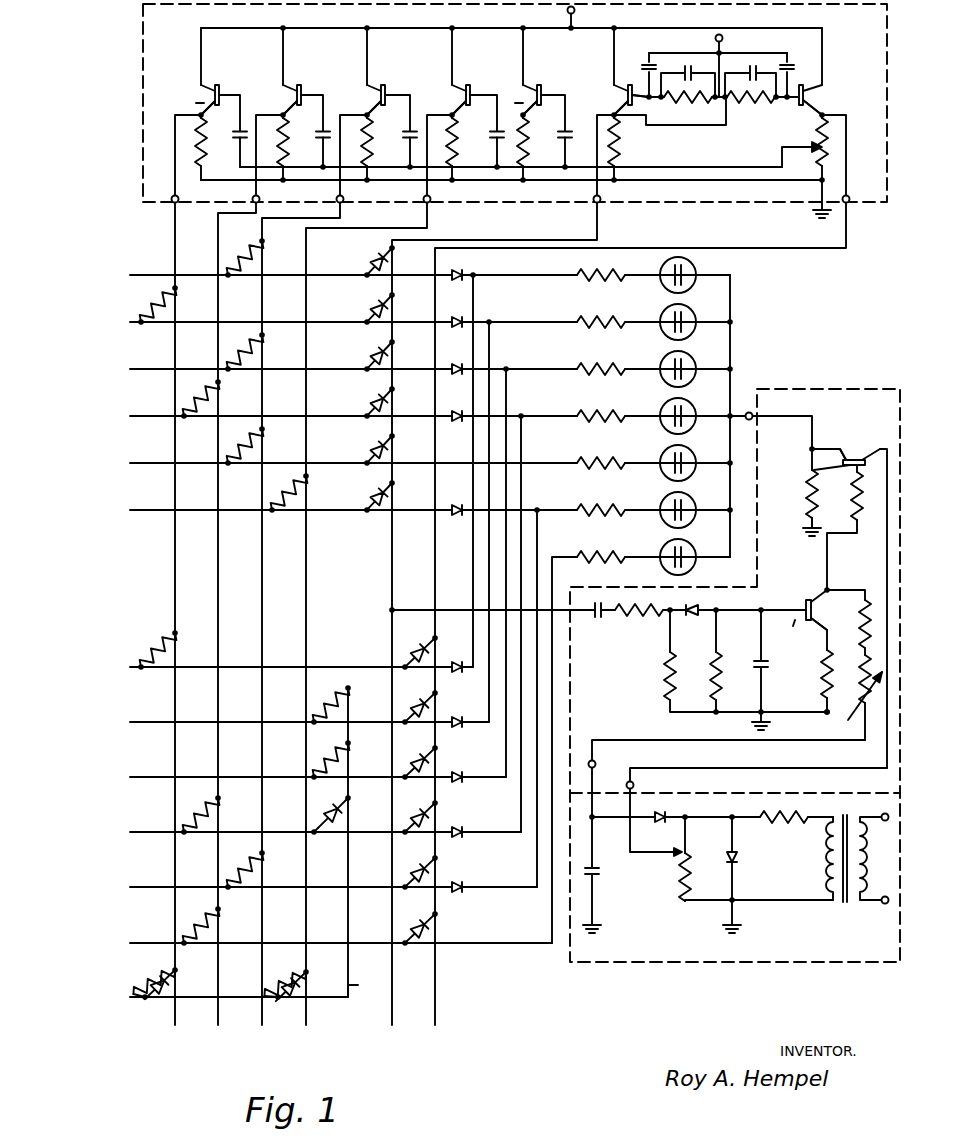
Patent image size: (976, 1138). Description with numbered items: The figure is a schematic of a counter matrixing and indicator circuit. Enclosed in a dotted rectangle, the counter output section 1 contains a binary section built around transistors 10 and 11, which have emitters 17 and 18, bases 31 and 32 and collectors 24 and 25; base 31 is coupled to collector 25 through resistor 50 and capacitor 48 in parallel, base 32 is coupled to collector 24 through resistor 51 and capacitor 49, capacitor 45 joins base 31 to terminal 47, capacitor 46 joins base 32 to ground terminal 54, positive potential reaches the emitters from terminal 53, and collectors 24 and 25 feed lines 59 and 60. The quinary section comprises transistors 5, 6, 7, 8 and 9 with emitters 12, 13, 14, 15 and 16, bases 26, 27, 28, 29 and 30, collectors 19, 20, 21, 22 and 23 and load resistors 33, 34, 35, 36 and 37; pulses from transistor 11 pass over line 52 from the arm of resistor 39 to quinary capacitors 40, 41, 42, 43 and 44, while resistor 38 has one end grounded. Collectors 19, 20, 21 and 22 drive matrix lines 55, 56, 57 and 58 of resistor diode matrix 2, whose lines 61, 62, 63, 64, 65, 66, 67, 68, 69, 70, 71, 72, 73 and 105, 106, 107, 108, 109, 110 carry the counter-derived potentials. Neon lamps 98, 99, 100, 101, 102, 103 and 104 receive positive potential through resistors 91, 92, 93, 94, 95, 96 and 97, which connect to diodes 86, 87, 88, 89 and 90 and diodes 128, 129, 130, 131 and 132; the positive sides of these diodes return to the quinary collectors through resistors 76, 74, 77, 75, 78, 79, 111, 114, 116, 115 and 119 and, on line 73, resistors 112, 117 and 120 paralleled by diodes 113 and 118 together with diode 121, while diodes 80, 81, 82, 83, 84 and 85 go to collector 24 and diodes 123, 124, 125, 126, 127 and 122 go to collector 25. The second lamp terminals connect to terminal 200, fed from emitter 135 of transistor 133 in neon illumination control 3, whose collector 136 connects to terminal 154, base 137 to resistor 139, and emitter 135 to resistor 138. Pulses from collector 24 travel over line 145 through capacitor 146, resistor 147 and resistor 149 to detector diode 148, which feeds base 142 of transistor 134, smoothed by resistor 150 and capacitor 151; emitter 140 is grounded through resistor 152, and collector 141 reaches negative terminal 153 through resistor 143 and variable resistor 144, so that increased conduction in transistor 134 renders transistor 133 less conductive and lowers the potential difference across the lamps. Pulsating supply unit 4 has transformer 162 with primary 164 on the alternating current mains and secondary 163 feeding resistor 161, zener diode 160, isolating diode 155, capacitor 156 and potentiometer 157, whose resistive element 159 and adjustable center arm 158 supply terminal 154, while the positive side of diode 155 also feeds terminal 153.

The output section of counter circuit 1 is at (868, 29).
The resistor diode matrix 2 is at (350, 569).
The neon illumination control 3 is at (876, 411).
The pulsating supply unit 4 is at (650, 946).
The quinary circuit transistor 5 is at (220, 86).
The quinary circuit transistor 6 is at (302, 86).
The quinary circuit transistor 7 is at (386, 86).
The quinary circuit transistor 8 is at (476, 86).
The quinary circuit transistor 9 is at (548, 86).
The binary circuit transistor 10 is at (632, 80).
The binary circuit transistor 11 is at (835, 84).
The emitter 12 is at (201, 57).
The emitter 13 is at (283, 57).
The emitter 14 is at (367, 57).
The emitter 15 is at (452, 57).
The emitter 16 is at (522, 57).
The emitter 17 is at (613, 47).
The emitter 18 is at (821, 38).
The collector 19 is at (194, 102).
The collector 20 is at (278, 102).
The collector 21 is at (365, 104).
The collector 22 is at (456, 102).
The collector 23 is at (517, 106).
The collector 24 is at (612, 104).
The collector 25 is at (818, 100).
The base 26 is at (225, 113).
The base 27 is at (309, 113).
The base 28 is at (395, 113).
The base 29 is at (495, 108).
The base 30 is at (549, 113).
The base 31 is at (646, 104).
The base 32 is at (785, 105).
The load resistor 33 is at (193, 150).
The load resistor 34 is at (294, 147).
The load resistor 35 is at (378, 147).
The load resistor 36 is at (463, 147).
The load resistor 37 is at (534, 147).
The resistor 38 is at (626, 147).
The resistor 39 is at (804, 154).
The quinary capacitor 40 is at (236, 143).
The quinary capacitor 41 is at (326, 125).
The quinary capacitor 42 is at (412, 126).
The quinary capacitor 43 is at (492, 126).
The quinary capacitor 44 is at (560, 133).
The capacitor 45 is at (643, 62).
The capacitor 46 is at (798, 61).
The terminal 47 is at (723, 38).
The capacitor 48 is at (688, 75).
The capacitor 49 is at (750, 75).
The resistor 50 is at (688, 107).
The resistor 51 is at (751, 107).
The line 52 is at (734, 166).
The terminal 53 is at (567, 14).
The ground terminal 54 is at (810, 214).
The matrix line 55 is at (172, 223).
The matrix line 56 is at (216, 231).
The matrix line 57 is at (260, 223).
The matrix line 58 is at (304, 231).
The line 59 is at (390, 239).
The line 60 is at (433, 249).
The matrix line 61 is at (291, 266).
The matrix line 62 is at (291, 313).
The matrix line 63 is at (291, 360).
The matrix line 64 is at (291, 407).
The matrix line 65 is at (291, 454).
The matrix line 66 is at (291, 501).
The matrix line 67 is at (378, 656).
The matrix line 68 is at (378, 711).
The matrix line 69 is at (378, 766).
The matrix line 70 is at (378, 821).
The matrix line 71 is at (378, 876).
The matrix line 72 is at (383, 946).
The matrix line 73 is at (254, 987).
The resistor 74 is at (154, 304).
The resistor 75 is at (200, 399).
The resistor 76 is at (243, 258).
The resistor 77 is at (244, 352).
The resistor 78 is at (244, 446).
The resistor 79 is at (289, 492).
The diode 80 is at (369, 261).
The diode 81 is at (369, 308).
The diode 82 is at (369, 355).
The diode 83 is at (369, 402).
The diode 84 is at (369, 449).
The diode 85 is at (369, 496).
The diode 86 is at (449, 265).
The diode 87 is at (449, 310).
The diode 88 is at (449, 357).
The diode 89 is at (449, 404).
The diode 90 is at (449, 498).
The resistor 91 is at (574, 270).
The resistor 92 is at (588, 314).
The resistor 93 is at (590, 361).
The resistor 94 is at (591, 408).
The resistor 95 is at (589, 455).
The resistor 96 is at (591, 502).
The resistor 97 is at (588, 739).
The neon lamp 98 is at (658, 259).
The neon lamp 99 is at (661, 307).
The neon lamp 100 is at (660, 354).
The neon lamp 101 is at (659, 401).
The neon lamp 102 is at (659, 449).
The neon lamp 103 is at (659, 496).
The neon lamp 104 is at (661, 546).
The matrix line 105 is at (519, 462).
The matrix line 106 is at (519, 513).
The matrix line 107 is at (519, 564).
The matrix line 108 is at (537, 418).
The matrix line 109 is at (530, 465).
The matrix line 110 is at (557, 512).
The resistor 111 is at (153, 648).
The resistor 112 is at (152, 971).
The diode 113 is at (154, 991).
The resistor 114 is at (200, 809).
The resistor 115 is at (200, 920).
The resistor 116 is at (244, 864).
The resistor 117 is at (285, 972).
The diode 118 is at (290, 992).
The resistor 119 is at (329, 697).
The resistor 120 is at (329, 754).
The diode 121 is at (329, 808).
The diode 122 is at (400, 919).
The diode 123 is at (417, 644).
The diode 124 is at (417, 699).
The diode 125 is at (417, 755).
The diode 126 is at (417, 811).
The diode 127 is at (417, 866).
The diode 128 is at (455, 657).
The diode 129 is at (466, 712).
The diode 130 is at (477, 765).
The diode 131 is at (484, 820).
The diode 132 is at (494, 875).
The transistor 133 is at (850, 446).
The transistor 134 is at (804, 606).
The emitter 135 is at (799, 438).
The collector 136 is at (868, 453).
The base 137 is at (832, 471).
The resistor 138 is at (809, 479).
The resistor 139 is at (841, 527).
The emitter 140 is at (810, 637).
The collector 141 is at (810, 592).
The base 142 is at (780, 623).
The resistor 143 is at (845, 619).
The variable resistor 144 is at (858, 680).
The line 145 is at (466, 609).
The capacitor 146 is at (586, 602).
The resistor 147 is at (636, 622).
The diode 148 is at (700, 600).
The resistor 149 is at (662, 668).
The resistor 150 is at (713, 654).
The capacitor 151 is at (754, 660).
The resistor 152 is at (812, 689).
The terminal 153 is at (594, 764).
The terminal 154 is at (637, 790).
The isolating diode 155 is at (658, 813).
The capacitor 156 is at (599, 872).
The potentiometer 157 is at (674, 884).
The adjustable center arm 158 is at (674, 850).
The resistive element 159 is at (686, 850).
The zener diode 160 is at (737, 861).
The resistor 161 is at (797, 814).
The transformer 162 is at (852, 905).
The secondary 163 is at (826, 878).
The primary 164 is at (880, 857).
The terminal 200 is at (750, 412).